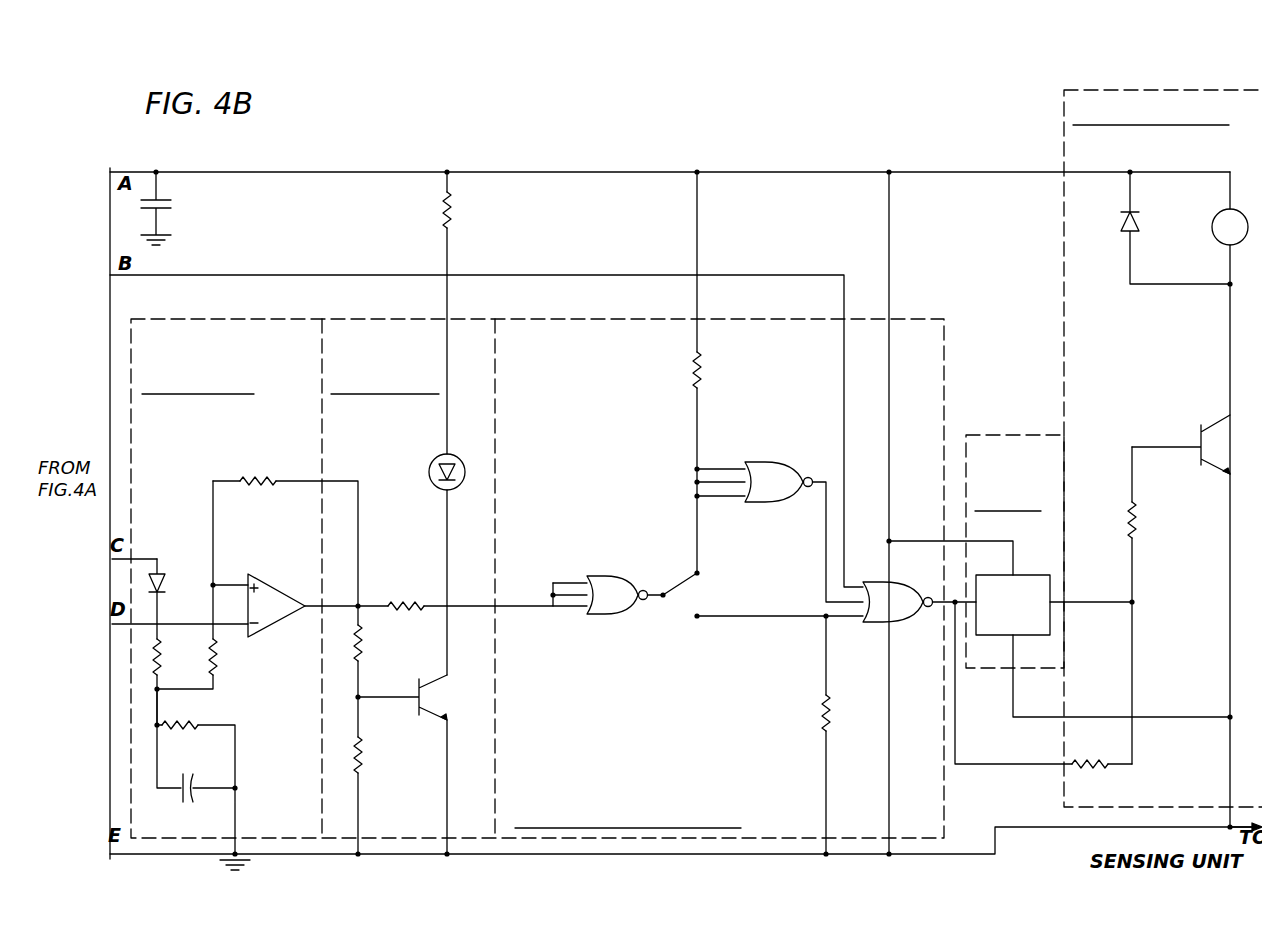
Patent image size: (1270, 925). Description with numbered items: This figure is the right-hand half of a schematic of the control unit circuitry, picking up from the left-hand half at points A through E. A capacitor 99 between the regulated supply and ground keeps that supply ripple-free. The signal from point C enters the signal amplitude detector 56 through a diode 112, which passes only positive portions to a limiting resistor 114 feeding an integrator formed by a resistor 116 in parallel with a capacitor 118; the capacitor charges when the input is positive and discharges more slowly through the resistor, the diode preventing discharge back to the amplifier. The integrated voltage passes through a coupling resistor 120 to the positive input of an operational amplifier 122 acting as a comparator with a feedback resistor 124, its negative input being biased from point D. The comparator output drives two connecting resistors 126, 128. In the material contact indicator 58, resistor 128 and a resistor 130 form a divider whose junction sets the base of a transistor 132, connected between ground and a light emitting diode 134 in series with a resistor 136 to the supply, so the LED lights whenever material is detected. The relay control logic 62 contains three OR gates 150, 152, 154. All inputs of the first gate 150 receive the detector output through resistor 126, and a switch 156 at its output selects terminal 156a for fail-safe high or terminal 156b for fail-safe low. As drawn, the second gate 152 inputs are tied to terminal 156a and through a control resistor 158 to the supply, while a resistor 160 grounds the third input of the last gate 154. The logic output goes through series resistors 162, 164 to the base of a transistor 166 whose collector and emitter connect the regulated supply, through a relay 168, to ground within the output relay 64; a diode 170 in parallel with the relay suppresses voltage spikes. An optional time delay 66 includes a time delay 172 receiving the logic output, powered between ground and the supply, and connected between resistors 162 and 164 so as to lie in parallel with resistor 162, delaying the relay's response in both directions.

The signal amplitude detector 56 is at (293, 317).
The material contact indicator 58 is at (475, 317).
The relay control logic 62 is at (945, 322).
The output relay 64 is at (1062, 136).
The optional time delay 66 is at (1028, 432).
The capacitor 99 is at (174, 199).
The diode 112 is at (160, 572).
The limiting resistor 114 is at (160, 665).
The resistor 116 is at (194, 720).
The capacitor 118 is at (192, 782).
The coupling resistor 120 is at (216, 661).
The operational amplifier 122 is at (276, 576).
The feedback resistor 124 is at (260, 472).
The connecting resistor 126 is at (406, 598).
The connecting resistor 128 is at (366, 645).
The resistor 130 is at (366, 765).
The transistor 132 is at (430, 685).
The light emitting diode 134 is at (430, 460).
The resistor 136 is at (452, 205).
The first OR gate 150 is at (594, 622).
The second OR gate 152 is at (773, 458).
The third OR gate 154 is at (872, 620).
The switch 156 is at (676, 582).
The switch terminal 156a is at (704, 569).
The switch terminal 156b is at (696, 616).
The control resistor 158 is at (704, 364).
The resistor 160 is at (820, 718).
The resistor 162 is at (1108, 774).
The resistor 164 is at (1138, 530).
The transistor 166 is at (1196, 428).
The relay 168 is at (1212, 244).
The diode 170 is at (1120, 232).
The time delay 172 is at (1036, 570).